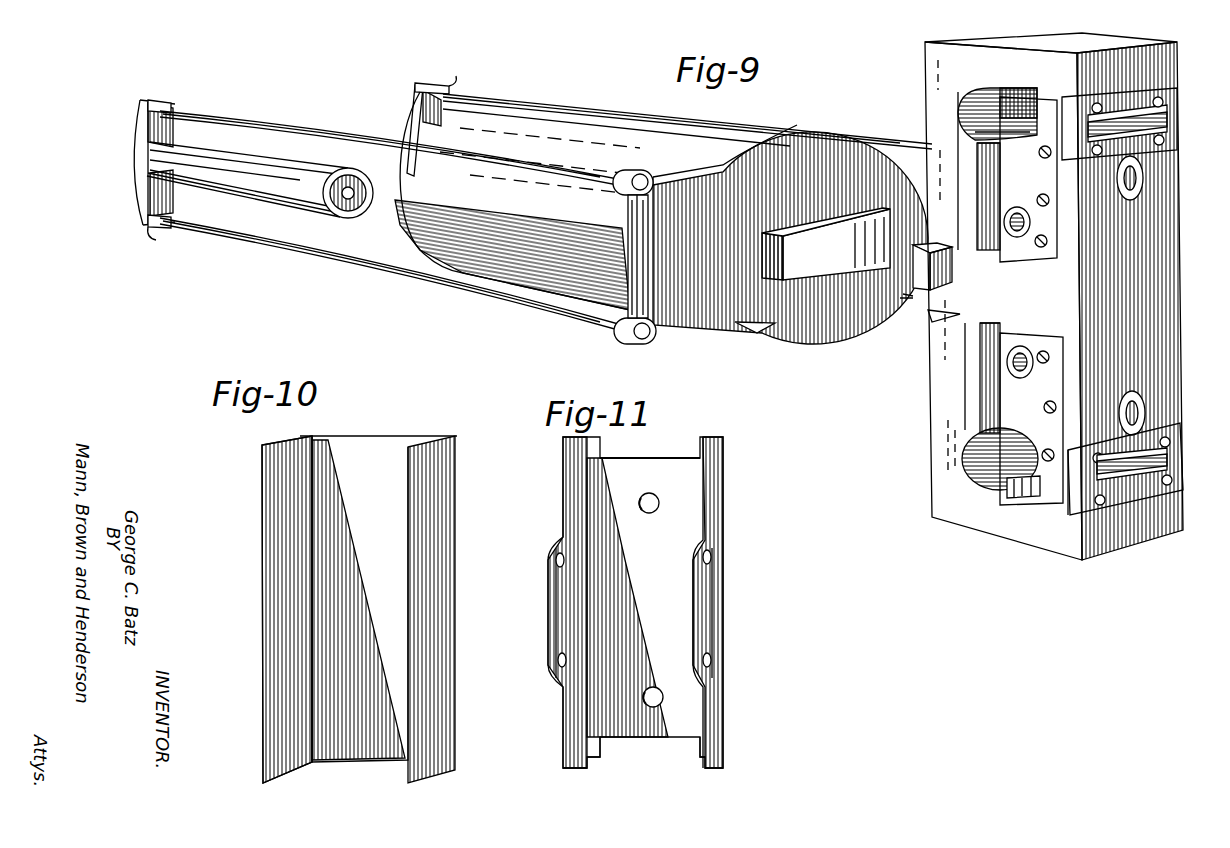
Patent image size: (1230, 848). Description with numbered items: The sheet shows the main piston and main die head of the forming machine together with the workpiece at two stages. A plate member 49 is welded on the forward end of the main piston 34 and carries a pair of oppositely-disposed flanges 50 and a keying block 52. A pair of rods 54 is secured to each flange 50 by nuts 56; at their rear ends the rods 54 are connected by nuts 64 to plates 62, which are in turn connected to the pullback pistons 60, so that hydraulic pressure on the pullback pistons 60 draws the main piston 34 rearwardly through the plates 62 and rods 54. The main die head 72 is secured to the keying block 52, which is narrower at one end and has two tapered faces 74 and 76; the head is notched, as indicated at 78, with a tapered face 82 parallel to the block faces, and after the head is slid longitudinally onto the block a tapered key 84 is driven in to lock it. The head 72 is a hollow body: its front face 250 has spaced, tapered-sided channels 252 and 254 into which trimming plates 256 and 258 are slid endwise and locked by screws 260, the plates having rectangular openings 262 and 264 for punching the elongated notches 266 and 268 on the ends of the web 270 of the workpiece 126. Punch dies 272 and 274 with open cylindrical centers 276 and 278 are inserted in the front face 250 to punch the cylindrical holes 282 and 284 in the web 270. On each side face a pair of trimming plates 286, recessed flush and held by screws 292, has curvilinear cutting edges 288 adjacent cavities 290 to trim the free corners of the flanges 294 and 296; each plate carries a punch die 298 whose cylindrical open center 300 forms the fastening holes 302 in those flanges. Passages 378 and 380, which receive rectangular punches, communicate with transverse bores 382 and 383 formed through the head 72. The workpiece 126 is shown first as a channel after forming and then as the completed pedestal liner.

In FIG. 9, the main piston 34 is at (568, 107).
In FIG. 9, the plate member 49 is at (798, 345).
In FIG. 9, the flanges 50 is at (672, 332).
In FIG. 9, the keying block 52 is at (833, 270).
In FIG. 9, the rods 54 is at (352, 137).
In FIG. 9, the nuts 56 is at (630, 171).
In FIG. 9, the pullback pistons 60 is at (282, 210).
In FIG. 9, the plates 62 is at (140, 140).
In FIG. 9, the nuts 64 is at (168, 101).
In FIG. 9, the main die head 72 is at (1163, 308).
In FIG. 9, the tapered face 74 is at (813, 223).
In FIG. 9, the tapered face 76 is at (762, 332).
In FIG. 9, the notch 78 is at (950, 290).
In FIG. 9, the tapered face 82 is at (952, 314).
In FIG. 9, the tapered key 84 is at (910, 297).
In FIG. 9, the front face 250 is at (1172, 226).
In FIG. 9, the channel 252 is at (1085, 102).
In FIG. 9, the channel 254 is at (1076, 520).
In FIG. 9, the trimming plate 256 is at (1172, 124).
In FIG. 9, the trimming plate 258 is at (1175, 462).
In FIG. 9, the screws 260 is at (1160, 100).
In FIG. 9, the rectangular opening 262 is at (1102, 151).
In FIG. 9, the rectangular opening 264 is at (1172, 481).
In FIG. 9, the punch die 272 is at (1140, 190).
In FIG. 9, the punch die 274 is at (1147, 405).
In FIG. 9, the open cylindrical center 276 is at (1137, 176).
In FIG. 9, the open cylindrical center 278 is at (1140, 414).
In FIG. 9, the trimming plates 286 is at (1047, 262).
In FIG. 9, the curvilinear cutting edges 288 is at (998, 226).
In FIG. 9, the cavities 290 is at (982, 166).
In FIG. 9, the screws 292 is at (1040, 198).
In FIG. 9, the punch die 298 is at (1018, 240).
In FIG. 9, the cylindrical open center 300 is at (1025, 223).
In FIG. 9, the passage 378 is at (1002, 123).
In FIG. 9, the passage 380 is at (1021, 500).
In FIG. 9, the transverse bore 382 is at (963, 100).
In FIG. 9, the transverse bore 383 is at (965, 462).
In FIG. 10, the workpiece 126 is at (386, 447).
In FIG. 11, the workpiece 126 is at (724, 472).
In FIG. 11, the elongated notch 266 is at (625, 460).
In FIG. 11, the elongated notch 268 is at (655, 740).
In FIG. 11, the web 270 is at (610, 740).
In FIG. 11, the cylindrical hole 282 is at (648, 514).
In FIG. 11, the cylindrical hole 284 is at (651, 696).
In FIG. 11, the flange 294 is at (724, 768).
In FIG. 11, the flange 296 is at (576, 770).
In FIG. 11, the fastening holes 302 is at (712, 556).